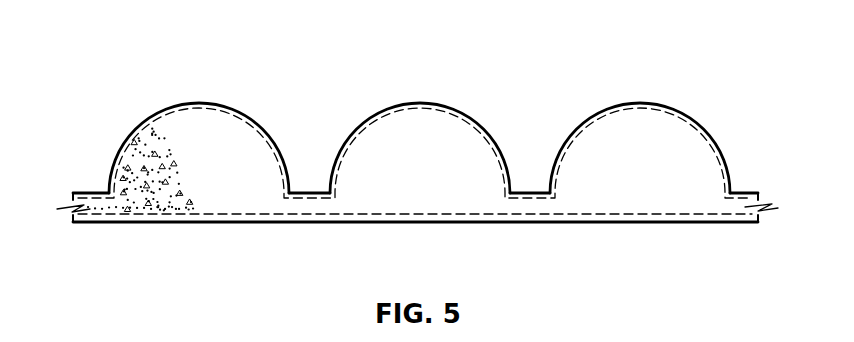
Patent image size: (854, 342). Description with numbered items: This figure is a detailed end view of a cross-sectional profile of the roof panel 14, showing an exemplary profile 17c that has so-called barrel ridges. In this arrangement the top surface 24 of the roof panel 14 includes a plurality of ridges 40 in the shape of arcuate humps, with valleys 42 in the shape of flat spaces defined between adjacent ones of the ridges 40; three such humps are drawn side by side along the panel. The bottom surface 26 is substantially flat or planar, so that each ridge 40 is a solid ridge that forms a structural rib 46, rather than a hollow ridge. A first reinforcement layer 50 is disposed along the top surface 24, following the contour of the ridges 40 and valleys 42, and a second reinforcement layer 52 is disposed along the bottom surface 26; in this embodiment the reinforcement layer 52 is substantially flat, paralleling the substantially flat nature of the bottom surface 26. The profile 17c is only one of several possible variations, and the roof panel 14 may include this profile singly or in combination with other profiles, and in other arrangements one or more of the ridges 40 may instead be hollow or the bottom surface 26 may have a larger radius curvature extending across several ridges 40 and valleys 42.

The roof panel 14 is at (709, 99).
The profile 17c is at (123, 135).
The top surface 24 is at (478, 127).
The bottom surface 26 is at (493, 222).
The ridges 40 is at (199, 103).
The valleys 42 is at (309, 192).
The structural rib 46 is at (253, 185).
The first reinforcement layer 50 is at (240, 118).
The second reinforcement layer 52 is at (191, 216).